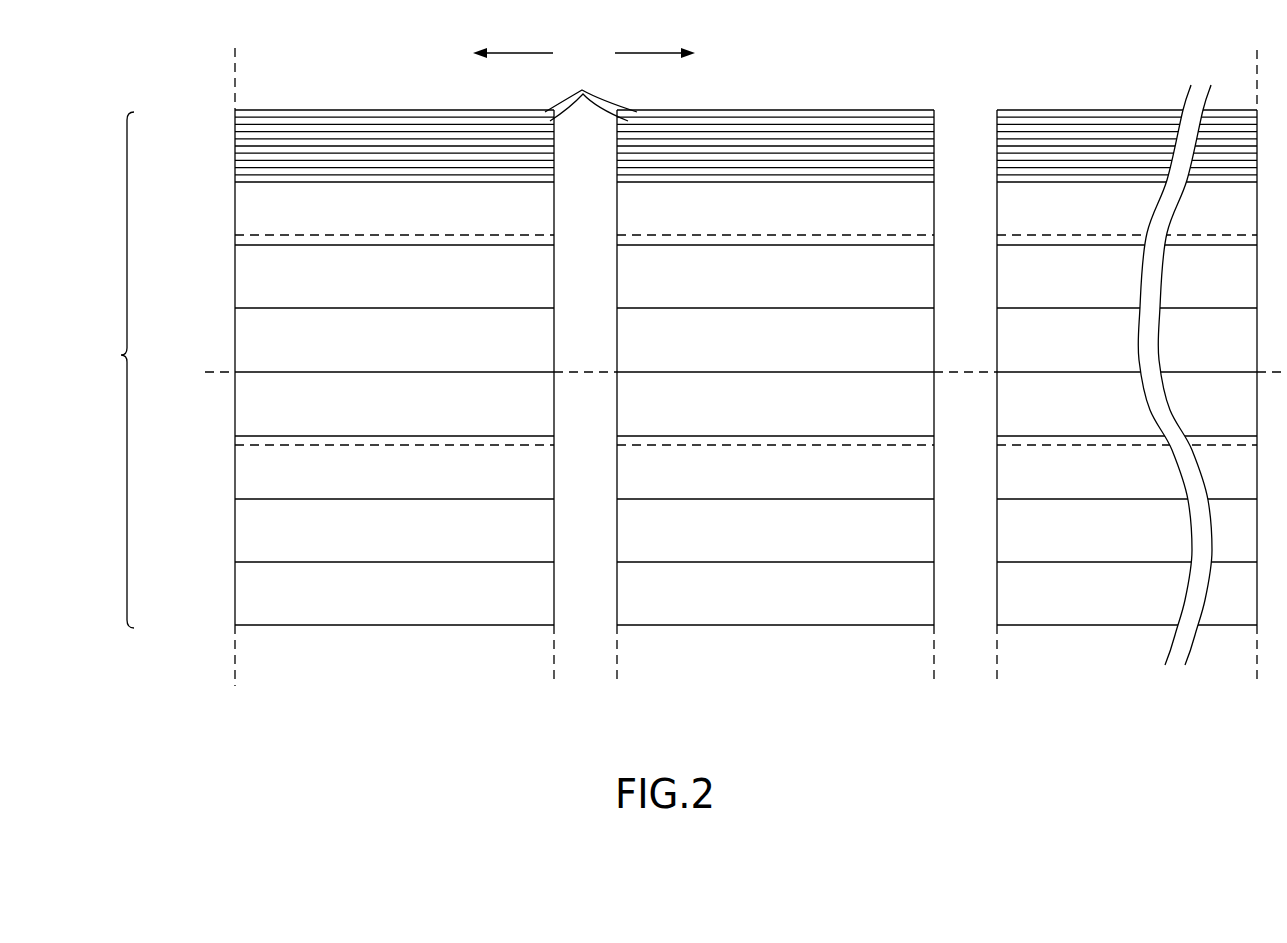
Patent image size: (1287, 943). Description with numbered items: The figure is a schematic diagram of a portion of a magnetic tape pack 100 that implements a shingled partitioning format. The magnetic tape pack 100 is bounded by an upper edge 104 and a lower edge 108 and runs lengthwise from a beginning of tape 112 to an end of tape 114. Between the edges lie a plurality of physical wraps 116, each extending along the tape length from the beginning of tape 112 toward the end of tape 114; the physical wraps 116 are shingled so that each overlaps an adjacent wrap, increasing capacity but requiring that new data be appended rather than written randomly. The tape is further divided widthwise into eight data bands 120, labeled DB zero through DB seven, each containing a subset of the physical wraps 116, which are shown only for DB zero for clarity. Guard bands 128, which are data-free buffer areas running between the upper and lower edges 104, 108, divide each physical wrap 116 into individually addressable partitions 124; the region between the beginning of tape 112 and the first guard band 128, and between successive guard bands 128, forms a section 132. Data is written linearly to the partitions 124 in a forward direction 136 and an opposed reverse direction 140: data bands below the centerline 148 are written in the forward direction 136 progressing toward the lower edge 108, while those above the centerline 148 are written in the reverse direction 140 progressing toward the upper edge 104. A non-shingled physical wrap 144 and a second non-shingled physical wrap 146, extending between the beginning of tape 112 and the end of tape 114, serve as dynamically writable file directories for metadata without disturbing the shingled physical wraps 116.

The magnetic tape pack 100 is at (203, 63).
The upper edge 104 is at (321, 111).
The lower edge 108 is at (656, 626).
The beginning of tape (BOT) 112 is at (235, 648).
The end of tape (EOT) 114 is at (1257, 662).
The physical wraps 116 is at (232, 133).
The data bands 120 is at (154, 354).
The partitions 124 is at (591, 91).
The guard bands 128 is at (570, 288).
The section 132 is at (412, 704).
The forward direction 136 is at (638, 53).
The reverse direction 140 is at (527, 53).
The non-shingled physical wrap 144 is at (234, 444).
The second non-shingled physical wrap 146 is at (234, 239).
The centerline 148 is at (220, 372).